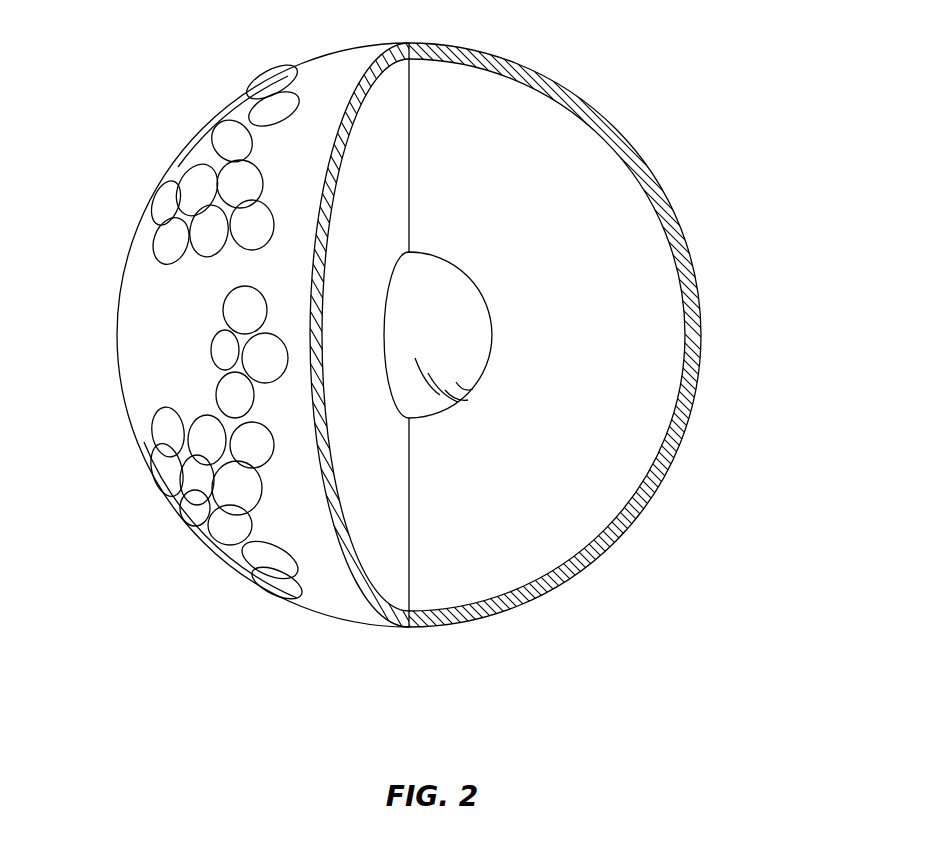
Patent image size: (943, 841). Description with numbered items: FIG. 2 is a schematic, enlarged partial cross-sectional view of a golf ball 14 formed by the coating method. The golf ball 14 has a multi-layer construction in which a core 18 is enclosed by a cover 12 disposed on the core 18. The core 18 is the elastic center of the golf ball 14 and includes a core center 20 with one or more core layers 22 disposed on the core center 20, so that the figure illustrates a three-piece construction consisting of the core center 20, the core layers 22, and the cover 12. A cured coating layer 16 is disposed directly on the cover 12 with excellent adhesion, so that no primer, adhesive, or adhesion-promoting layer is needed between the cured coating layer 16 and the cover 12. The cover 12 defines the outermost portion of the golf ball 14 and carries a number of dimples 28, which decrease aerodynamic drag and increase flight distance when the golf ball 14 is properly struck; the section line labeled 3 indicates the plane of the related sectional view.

The golf ball 14 is at (189, 82).
The cured coating layer 16 is at (148, 345).
The dimples 28 is at (188, 516).
The cover 12 is at (697, 322).
The core 18 is at (652, 23).
The core layers 22 is at (567, 258).
The core center 20 is at (435, 285).
The section line 3- 3 is at (558, 383).